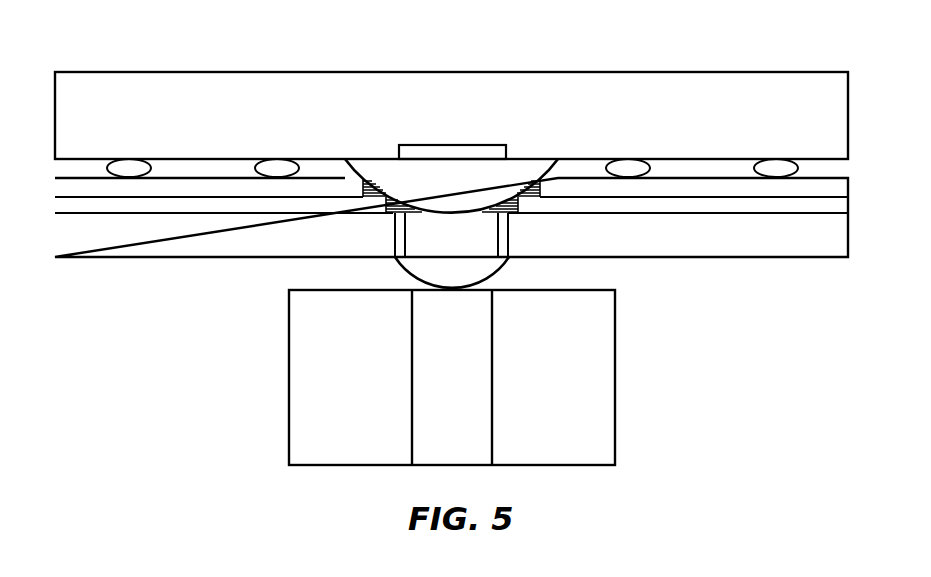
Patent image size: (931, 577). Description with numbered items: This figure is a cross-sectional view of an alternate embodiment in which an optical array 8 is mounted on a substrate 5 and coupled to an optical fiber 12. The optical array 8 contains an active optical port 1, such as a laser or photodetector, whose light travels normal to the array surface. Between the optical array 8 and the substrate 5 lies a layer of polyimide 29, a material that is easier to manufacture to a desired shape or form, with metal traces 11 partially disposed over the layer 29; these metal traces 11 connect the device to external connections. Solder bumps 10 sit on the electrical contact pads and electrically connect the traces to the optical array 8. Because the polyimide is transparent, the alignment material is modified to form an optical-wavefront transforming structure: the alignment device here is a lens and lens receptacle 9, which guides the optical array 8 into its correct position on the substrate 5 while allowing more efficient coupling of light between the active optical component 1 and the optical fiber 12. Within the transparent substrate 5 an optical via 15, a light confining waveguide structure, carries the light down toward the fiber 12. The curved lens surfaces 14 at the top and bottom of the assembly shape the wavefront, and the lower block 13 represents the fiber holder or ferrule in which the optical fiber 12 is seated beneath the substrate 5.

The optical port 1 is at (427, 147).
The substrate 5 is at (629, 257).
The optical array 8 is at (174, 76).
The lens receptacle 9 is at (383, 212).
The solder bumps 10 is at (628, 160).
The metal traces 11 is at (811, 190).
The optical fiber 12 is at (423, 375).
The heat sink 13 is at (297, 435).
The lens / curved cavity 14 is at (370, 157).
The optical via 15 is at (503, 243).
The polyimide layer 29 is at (733, 207).